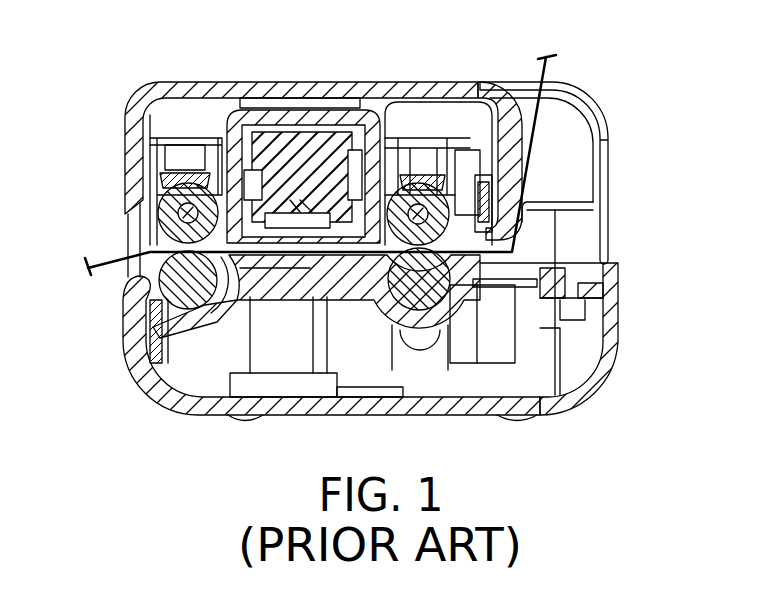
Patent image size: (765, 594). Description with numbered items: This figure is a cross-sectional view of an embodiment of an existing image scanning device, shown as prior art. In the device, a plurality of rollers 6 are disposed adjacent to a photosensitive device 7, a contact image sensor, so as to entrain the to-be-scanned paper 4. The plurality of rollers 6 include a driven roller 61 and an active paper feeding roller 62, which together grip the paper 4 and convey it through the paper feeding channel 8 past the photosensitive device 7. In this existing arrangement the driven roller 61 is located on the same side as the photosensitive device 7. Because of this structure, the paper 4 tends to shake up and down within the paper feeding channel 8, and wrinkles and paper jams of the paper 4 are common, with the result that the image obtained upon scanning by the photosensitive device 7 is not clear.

The to-be-scanned paper 4 is at (535, 147).
The rollers 6 is at (400, 32).
The driven roller 61 is at (412, 195).
The active paper feeding roller 62 is at (165, 302).
The photosensitive device 7 is at (282, 133).
The paper feeding channel 8 is at (200, 248).